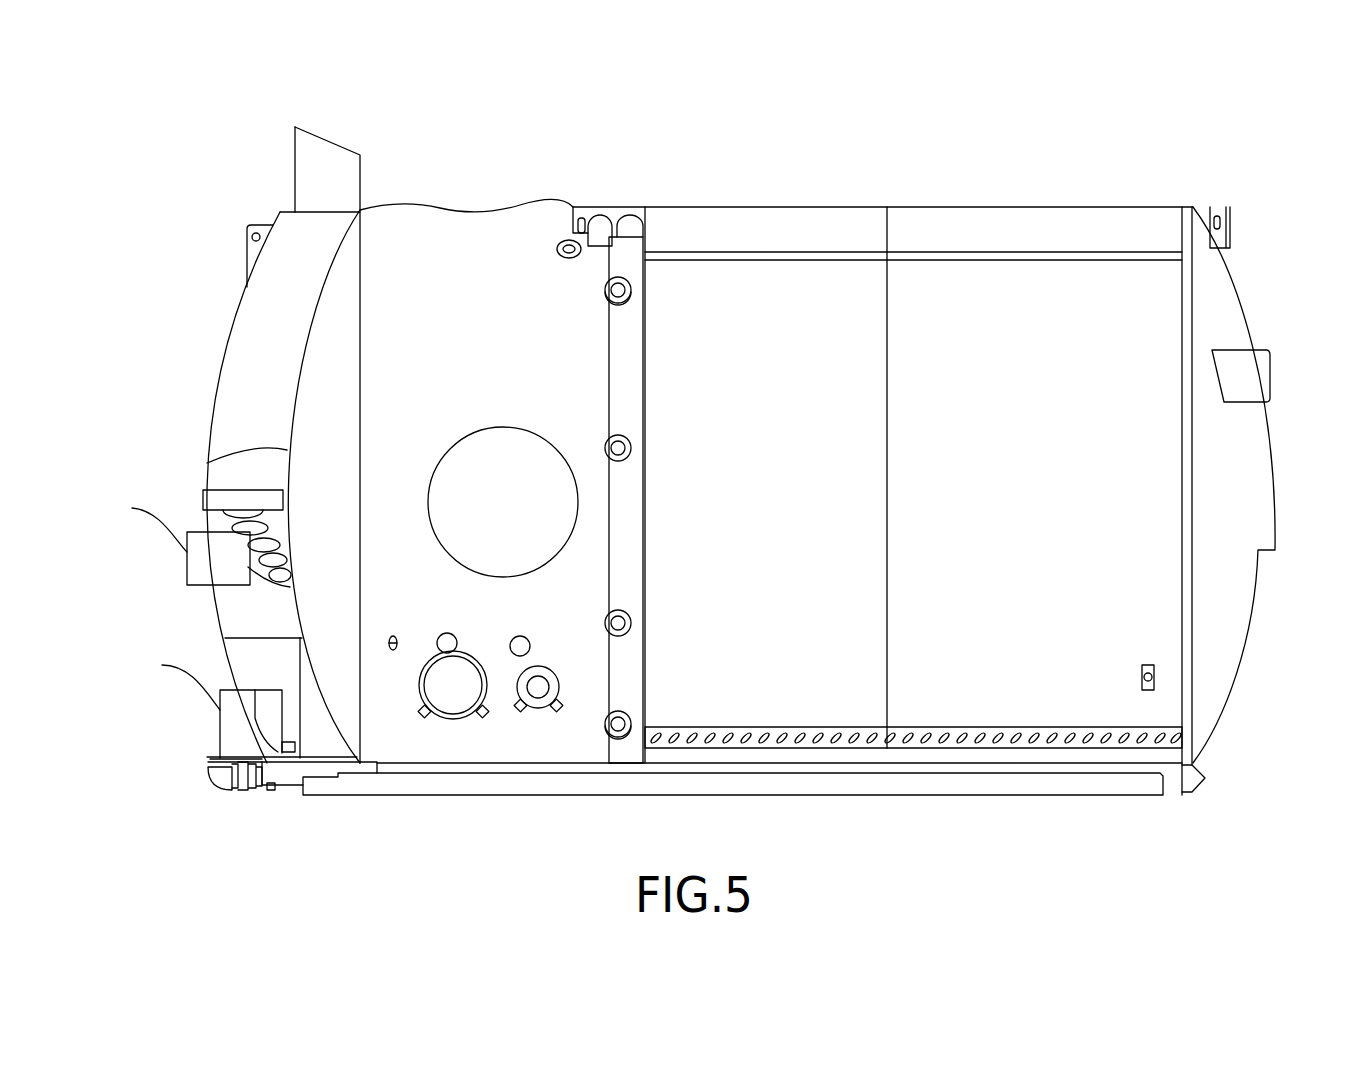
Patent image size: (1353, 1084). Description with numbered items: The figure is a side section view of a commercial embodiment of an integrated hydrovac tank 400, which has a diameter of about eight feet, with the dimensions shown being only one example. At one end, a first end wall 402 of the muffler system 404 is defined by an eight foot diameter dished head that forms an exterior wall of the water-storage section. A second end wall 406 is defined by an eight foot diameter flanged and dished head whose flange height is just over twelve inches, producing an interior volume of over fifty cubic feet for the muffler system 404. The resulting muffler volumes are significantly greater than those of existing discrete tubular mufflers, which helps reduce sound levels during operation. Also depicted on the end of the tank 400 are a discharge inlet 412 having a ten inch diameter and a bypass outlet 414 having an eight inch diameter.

The integrated hydrovac tank 400 is at (1238, 146).
The first end wall 402 is at (207, 463).
The muffler system 404 is at (268, 318).
The second end wall 406 is at (218, 378).
The discharge inlet 412 is at (220, 738).
The bypass outlet 414 is at (187, 572).